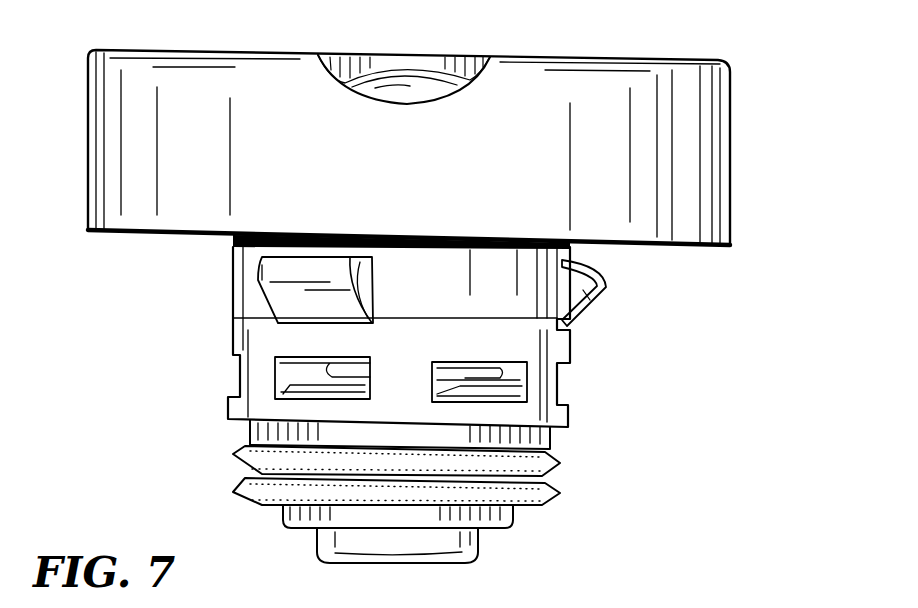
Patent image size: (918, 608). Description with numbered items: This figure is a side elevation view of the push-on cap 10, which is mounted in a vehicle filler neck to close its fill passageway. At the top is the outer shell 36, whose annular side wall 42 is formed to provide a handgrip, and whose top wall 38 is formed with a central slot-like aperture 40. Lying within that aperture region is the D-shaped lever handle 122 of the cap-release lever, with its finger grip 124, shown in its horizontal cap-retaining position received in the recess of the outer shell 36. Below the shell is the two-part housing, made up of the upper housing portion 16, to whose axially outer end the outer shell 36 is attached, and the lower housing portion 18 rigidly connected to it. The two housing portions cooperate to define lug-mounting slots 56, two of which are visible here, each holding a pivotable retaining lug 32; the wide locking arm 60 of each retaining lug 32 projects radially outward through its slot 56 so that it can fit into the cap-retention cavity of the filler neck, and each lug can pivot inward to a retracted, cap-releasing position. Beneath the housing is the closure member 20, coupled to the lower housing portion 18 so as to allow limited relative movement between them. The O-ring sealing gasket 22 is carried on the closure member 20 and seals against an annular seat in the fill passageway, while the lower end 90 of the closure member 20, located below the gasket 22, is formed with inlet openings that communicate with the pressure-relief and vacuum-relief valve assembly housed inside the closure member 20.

The push-on cap 10 is at (691, 53).
The outer shell 36 is at (158, 46).
The top wall 38 is at (220, 50).
The central slot-like aperture 40 is at (354, 55).
The D-shaped lever handle 122 is at (472, 58).
The finger grip 124 is at (437, 90).
The annular side wall 42 is at (90, 140).
The upper housing portion 16 is at (231, 262).
The wide locking arm 60 is at (300, 270).
The lug-mounting slots 56 is at (372, 284).
The retaining lug 32 is at (258, 291).
The closure member 20 is at (509, 377).
The lower housing portion 18 is at (225, 414).
The O-ring sealing gasket 22 is at (554, 486).
The lower end 90 is at (337, 545).